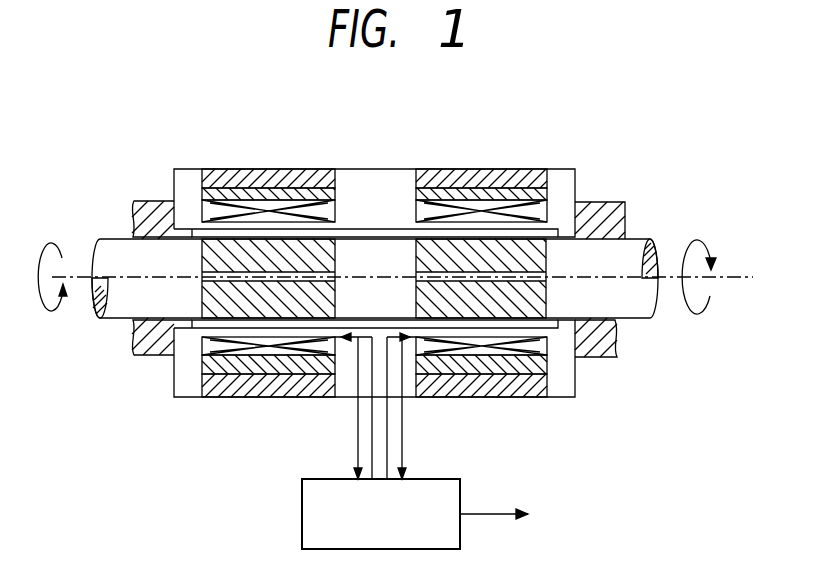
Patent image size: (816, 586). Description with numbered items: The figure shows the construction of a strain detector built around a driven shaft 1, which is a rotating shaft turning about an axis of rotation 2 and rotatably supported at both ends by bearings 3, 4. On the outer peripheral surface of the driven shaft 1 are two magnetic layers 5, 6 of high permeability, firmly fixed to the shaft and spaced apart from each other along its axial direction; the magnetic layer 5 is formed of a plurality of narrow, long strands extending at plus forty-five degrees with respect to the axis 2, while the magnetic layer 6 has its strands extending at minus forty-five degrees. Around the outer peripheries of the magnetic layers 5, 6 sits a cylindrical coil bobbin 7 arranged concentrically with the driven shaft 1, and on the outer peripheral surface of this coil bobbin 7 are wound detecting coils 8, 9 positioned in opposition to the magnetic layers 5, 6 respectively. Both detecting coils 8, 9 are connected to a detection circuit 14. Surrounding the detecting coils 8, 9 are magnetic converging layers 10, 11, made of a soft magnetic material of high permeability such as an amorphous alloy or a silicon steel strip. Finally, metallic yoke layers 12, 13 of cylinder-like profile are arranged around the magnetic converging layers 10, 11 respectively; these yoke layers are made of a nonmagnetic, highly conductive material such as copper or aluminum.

The driven shaft 1 is at (635, 245).
The axis of rotation 2 is at (731, 277).
The bearing 3 is at (600, 205).
The bearing 4 is at (152, 200).
The magnetic layer 5 is at (490, 287).
The magnetic layer 6 is at (278, 292).
The coil bobbin 7 is at (560, 180).
The detecting coil 8 is at (522, 190).
The detecting coil 9 is at (330, 210).
The magnetic converging layer 10 is at (480, 195).
The magnetic converging layer 11 is at (238, 178).
The metallic yoke layer 12 is at (430, 178).
The metallic yoke layer 13 is at (303, 182).
The detection circuit 14 is at (460, 495).